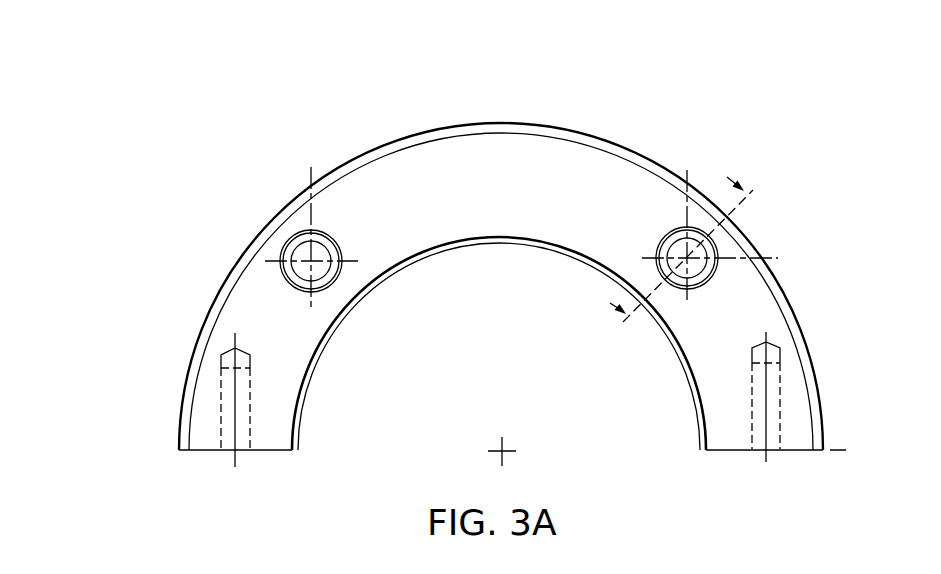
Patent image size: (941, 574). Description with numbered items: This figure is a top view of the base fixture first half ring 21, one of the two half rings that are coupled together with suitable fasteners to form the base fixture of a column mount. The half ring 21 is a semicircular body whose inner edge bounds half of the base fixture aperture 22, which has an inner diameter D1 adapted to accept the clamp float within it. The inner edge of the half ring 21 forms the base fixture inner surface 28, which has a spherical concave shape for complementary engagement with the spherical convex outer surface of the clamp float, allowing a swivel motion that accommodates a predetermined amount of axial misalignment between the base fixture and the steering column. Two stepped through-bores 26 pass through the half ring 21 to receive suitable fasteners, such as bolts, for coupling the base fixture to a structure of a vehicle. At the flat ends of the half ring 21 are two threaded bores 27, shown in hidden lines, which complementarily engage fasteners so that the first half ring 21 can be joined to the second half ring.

The base fixture first half ring 21 is at (618, 146).
The base fixture aperture 22 is at (678, 353).
The base fixture stepped through-bore 26 is at (718, 241).
The threaded bore 27 is at (783, 423).
The base fixture inner surface 28 is at (697, 404).
The inner diameter D1 is at (352, 351).